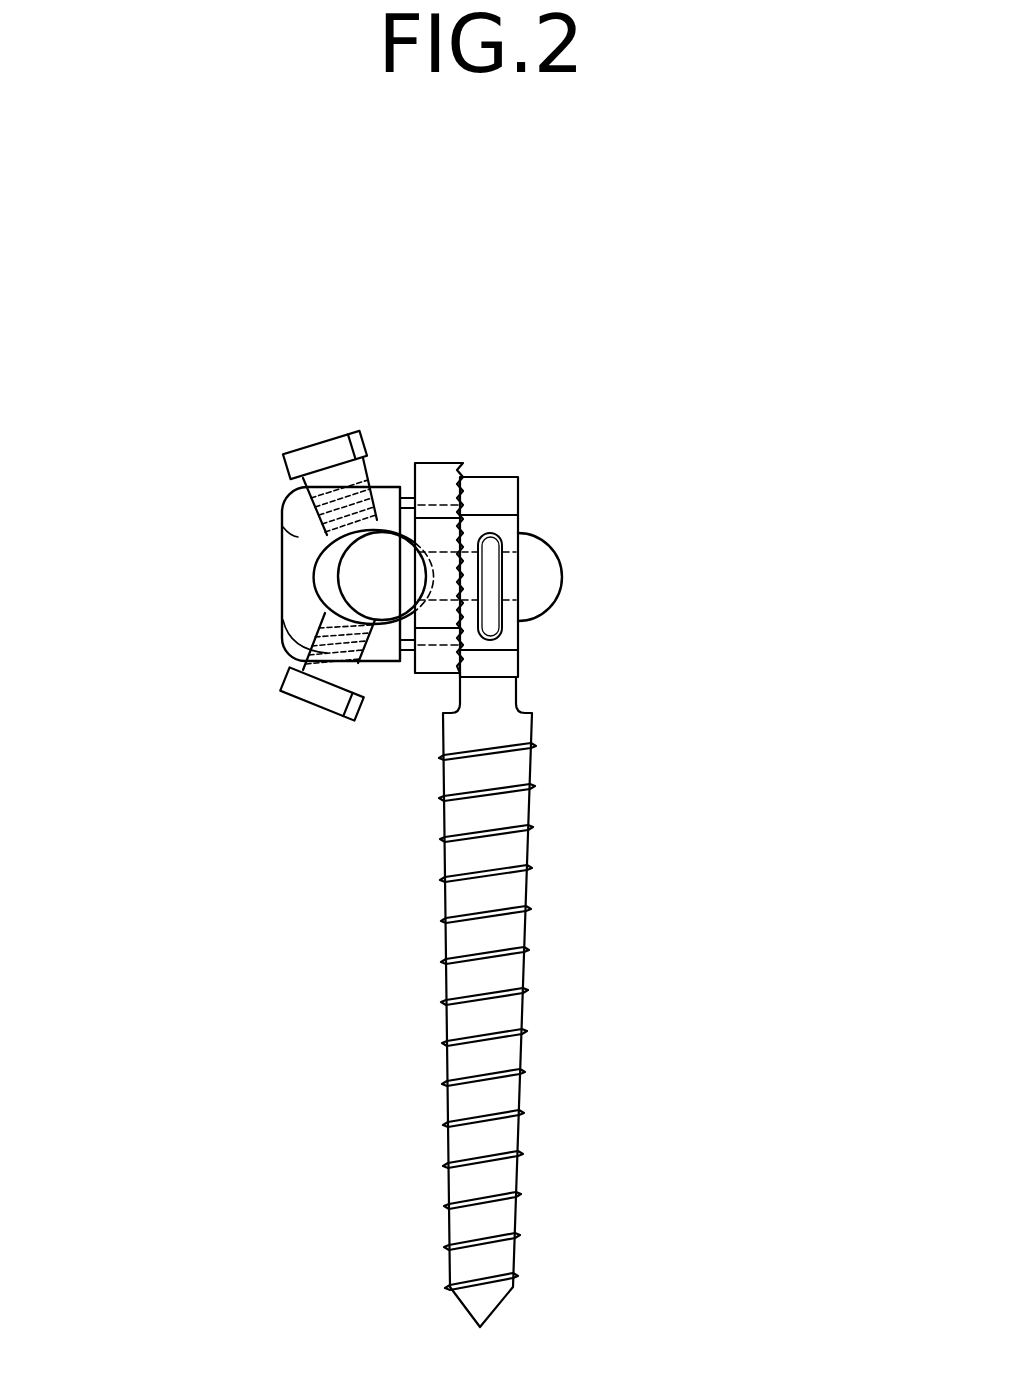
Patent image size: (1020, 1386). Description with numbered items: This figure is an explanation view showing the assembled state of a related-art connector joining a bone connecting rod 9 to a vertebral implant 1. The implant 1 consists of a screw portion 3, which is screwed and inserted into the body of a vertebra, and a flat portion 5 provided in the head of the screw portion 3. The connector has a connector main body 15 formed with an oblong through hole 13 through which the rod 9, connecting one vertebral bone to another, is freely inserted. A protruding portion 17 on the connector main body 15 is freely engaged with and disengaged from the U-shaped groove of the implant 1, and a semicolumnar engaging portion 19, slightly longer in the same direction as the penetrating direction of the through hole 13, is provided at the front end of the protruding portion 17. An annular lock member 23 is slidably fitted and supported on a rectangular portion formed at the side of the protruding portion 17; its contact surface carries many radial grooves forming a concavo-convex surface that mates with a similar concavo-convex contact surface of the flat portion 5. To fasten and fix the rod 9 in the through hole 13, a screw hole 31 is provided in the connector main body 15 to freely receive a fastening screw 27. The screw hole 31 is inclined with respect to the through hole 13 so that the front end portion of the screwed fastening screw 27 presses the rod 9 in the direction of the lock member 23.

The implant 1 is at (547, 887).
The screw portion 3 is at (525, 925).
The flat portion 5 is at (497, 478).
The bone connecting rod 9 is at (382, 583).
The oblong through hole 13 is at (318, 573).
The connector main body 15 is at (297, 537).
The protruding portion 17 is at (508, 628).
The semicolumnar engaging portion 19 is at (545, 571).
The annular lock member 23 is at (433, 472).
The fastening screw 27 is at (335, 432).
The screw hole 31 is at (282, 503).